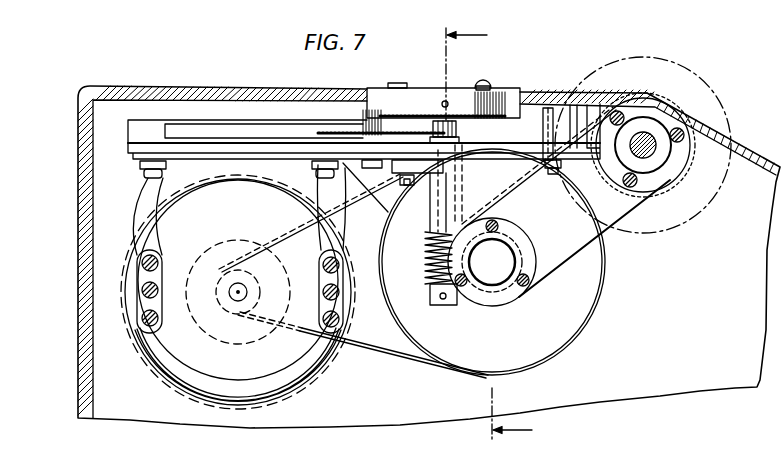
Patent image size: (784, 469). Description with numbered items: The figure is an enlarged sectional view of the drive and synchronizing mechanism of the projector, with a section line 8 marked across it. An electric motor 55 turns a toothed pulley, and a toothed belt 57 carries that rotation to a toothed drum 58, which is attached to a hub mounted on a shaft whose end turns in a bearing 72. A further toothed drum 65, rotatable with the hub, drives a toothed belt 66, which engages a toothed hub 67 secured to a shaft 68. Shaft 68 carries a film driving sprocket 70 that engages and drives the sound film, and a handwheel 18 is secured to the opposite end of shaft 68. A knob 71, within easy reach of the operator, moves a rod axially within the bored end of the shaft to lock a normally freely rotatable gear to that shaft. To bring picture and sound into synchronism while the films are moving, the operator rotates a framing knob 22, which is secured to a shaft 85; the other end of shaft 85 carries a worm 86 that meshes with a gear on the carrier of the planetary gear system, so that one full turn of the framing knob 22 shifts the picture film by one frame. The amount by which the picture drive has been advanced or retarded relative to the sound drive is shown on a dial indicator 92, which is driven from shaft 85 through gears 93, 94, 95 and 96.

The handwheel 18 is at (708, 83).
The framing knob 22 is at (462, 90).
The dial indicator 92 is at (514, 90).
The gear 93 is at (458, 135).
The gear 94 is at (412, 126).
The gear 95 is at (384, 112).
The gear 96 is at (506, 117).
The shaft 68 is at (650, 135).
The toothed hub 67 is at (662, 163).
The film driving sprocket 70 is at (665, 190).
The toothed belt 66 is at (566, 243).
The toothed drum 58 is at (582, 325).
The bearing 72 is at (507, 296).
The knob 71 is at (492, 274).
The toothed drum 65 is at (487, 291).
The worm 86 is at (426, 258).
The shaft 85 is at (437, 209).
The toothed belt 57 is at (402, 364).
The electric motor 55 is at (291, 361).
The section line 8- 8 is at (489, 237).